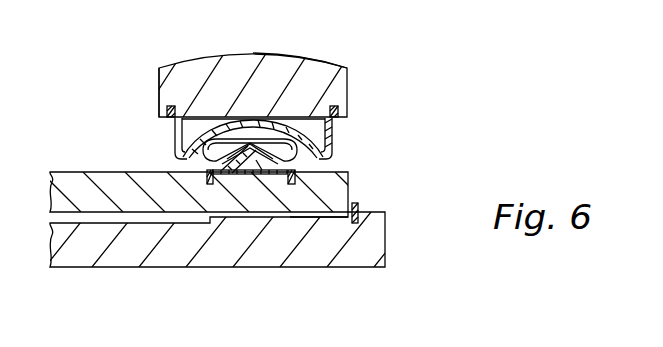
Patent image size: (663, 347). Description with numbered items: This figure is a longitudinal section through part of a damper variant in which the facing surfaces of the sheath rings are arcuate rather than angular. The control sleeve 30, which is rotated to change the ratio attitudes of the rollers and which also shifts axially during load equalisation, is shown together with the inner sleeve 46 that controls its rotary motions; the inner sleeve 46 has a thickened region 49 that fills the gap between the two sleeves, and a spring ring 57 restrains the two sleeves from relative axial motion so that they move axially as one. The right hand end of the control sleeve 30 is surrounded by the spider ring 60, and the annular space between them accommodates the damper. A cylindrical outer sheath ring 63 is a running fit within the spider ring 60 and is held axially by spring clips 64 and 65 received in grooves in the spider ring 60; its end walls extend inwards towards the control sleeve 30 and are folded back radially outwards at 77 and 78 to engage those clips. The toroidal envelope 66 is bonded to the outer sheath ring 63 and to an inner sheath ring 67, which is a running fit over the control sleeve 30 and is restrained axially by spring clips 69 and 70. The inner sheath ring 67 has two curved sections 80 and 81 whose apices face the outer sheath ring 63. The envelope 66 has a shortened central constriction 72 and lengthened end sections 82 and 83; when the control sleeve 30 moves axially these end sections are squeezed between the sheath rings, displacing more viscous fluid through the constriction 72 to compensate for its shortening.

The control sleeve 30 is at (80, 187).
The inner sleeve 46 is at (88, 257).
The thickened region 49 is at (295, 220).
The spring ring 57 is at (368, 202).
The spider ring 60 is at (304, 62).
The outer sheath ring 63 is at (233, 140).
The spring clip 64 is at (175, 121).
The spring clip 65 is at (340, 121).
The toroidal envelope 66 is at (222, 145).
The inner sheath ring 67 is at (258, 176).
The spring clip 69 is at (205, 166).
The spring clip 70 is at (303, 166).
The central section 72 is at (258, 138).
The folded-back portion 77 is at (175, 134).
The folded-back portion 78 is at (338, 143).
The curved section 80 is at (248, 182).
The curved section 81 is at (263, 172).
The end section 82 is at (160, 82).
The end section 83 is at (312, 57).